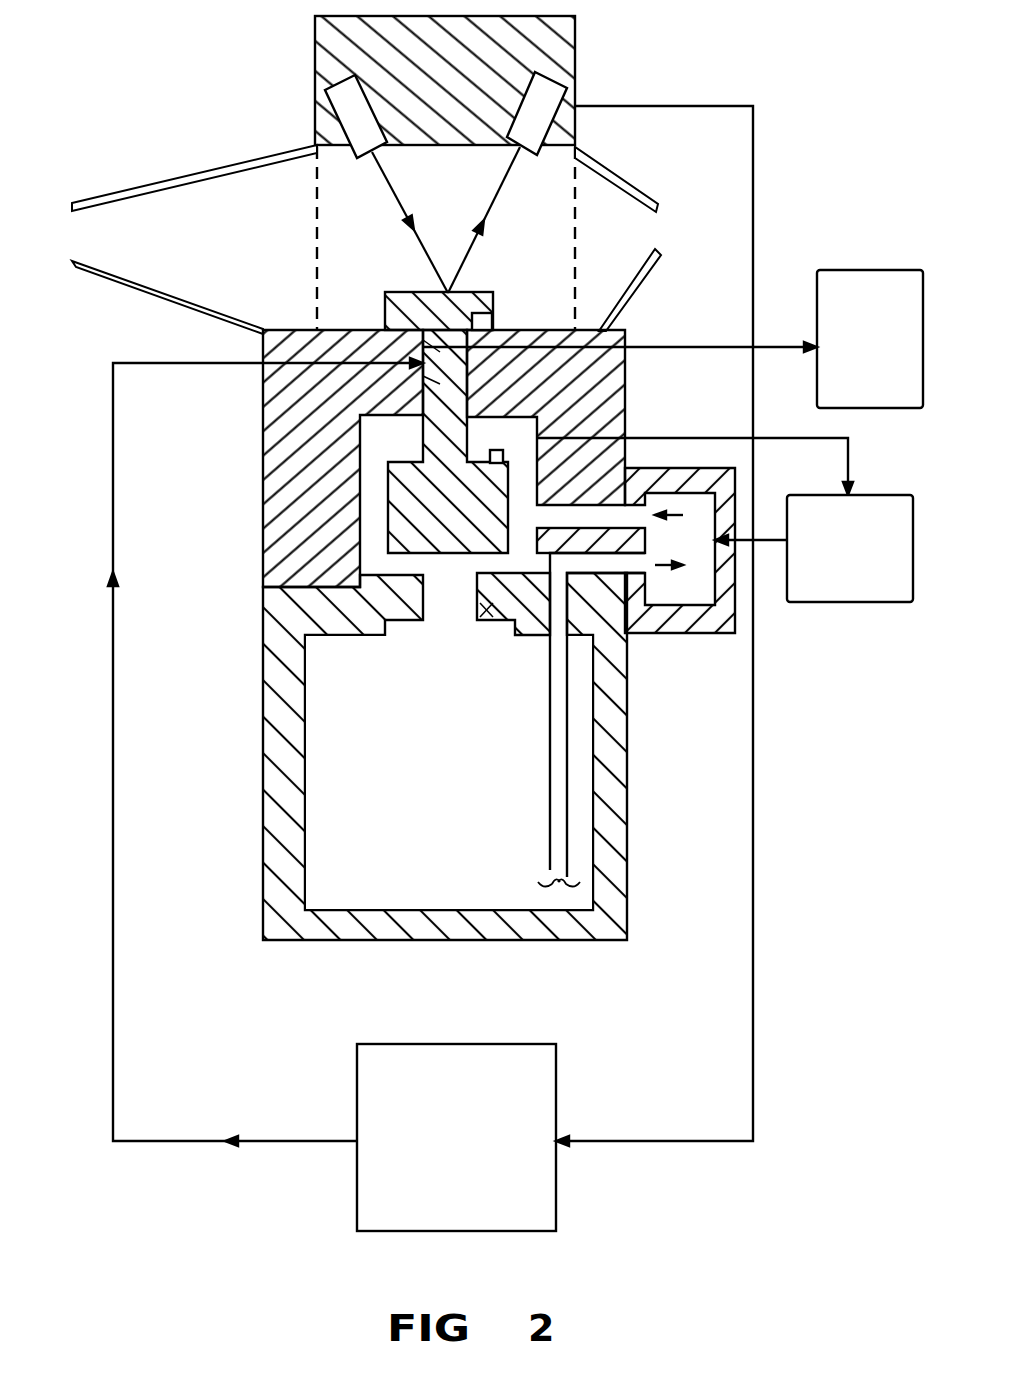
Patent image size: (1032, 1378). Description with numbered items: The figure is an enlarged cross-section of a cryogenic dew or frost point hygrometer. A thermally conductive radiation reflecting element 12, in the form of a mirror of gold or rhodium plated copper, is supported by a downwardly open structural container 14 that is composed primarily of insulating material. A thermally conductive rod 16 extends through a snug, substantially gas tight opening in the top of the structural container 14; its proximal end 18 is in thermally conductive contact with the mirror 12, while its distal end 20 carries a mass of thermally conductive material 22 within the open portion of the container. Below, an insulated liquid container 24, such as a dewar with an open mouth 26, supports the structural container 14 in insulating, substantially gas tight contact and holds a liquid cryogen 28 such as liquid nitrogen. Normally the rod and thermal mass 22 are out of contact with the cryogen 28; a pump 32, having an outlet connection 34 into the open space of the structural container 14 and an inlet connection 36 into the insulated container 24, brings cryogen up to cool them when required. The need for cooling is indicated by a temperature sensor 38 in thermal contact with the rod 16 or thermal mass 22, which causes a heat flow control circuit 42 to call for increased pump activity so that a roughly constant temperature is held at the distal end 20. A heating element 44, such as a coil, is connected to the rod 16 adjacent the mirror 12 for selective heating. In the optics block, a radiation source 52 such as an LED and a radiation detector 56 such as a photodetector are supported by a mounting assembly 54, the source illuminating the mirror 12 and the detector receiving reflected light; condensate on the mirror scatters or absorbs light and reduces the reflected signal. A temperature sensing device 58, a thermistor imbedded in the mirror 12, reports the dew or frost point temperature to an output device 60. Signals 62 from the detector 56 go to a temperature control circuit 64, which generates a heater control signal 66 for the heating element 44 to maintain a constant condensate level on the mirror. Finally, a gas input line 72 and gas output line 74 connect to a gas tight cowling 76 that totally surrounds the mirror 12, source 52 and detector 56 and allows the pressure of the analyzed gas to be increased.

The radiation reflecting element 12 is at (397, 290).
The structural container 14 is at (280, 569).
The thermally conductive rod 16 is at (423, 432).
The proximal end 18 is at (412, 344).
The distal end 20 is at (343, 448).
The mass of thermally conductive material 22 is at (420, 512).
The insulated liquid container 24 is at (265, 850).
The open mouth 26 is at (477, 620).
The liquid cryogen 28 is at (442, 808).
The pump 32 is at (687, 610).
The outlet connection 34 is at (590, 542).
The inlet connection 36 is at (550, 668).
The temperature sensor 38 is at (668, 459).
The heat flow control circuit 42 is at (835, 603).
The heating element 44 is at (423, 380).
The radiation source 52 is at (352, 110).
The mounting assembly 54 is at (330, 58).
The radiation detector 56 is at (567, 90).
The temperature sensing device 58 is at (495, 300).
The output device 60 is at (862, 410).
The signals 62 is at (702, 104).
The temperature control circuit 64 is at (485, 1212).
The heater control signal 66 is at (108, 447).
The gas input line 72 is at (100, 237).
The gas output line 74 is at (672, 237).
The gas tight cowling 76 is at (312, 218).